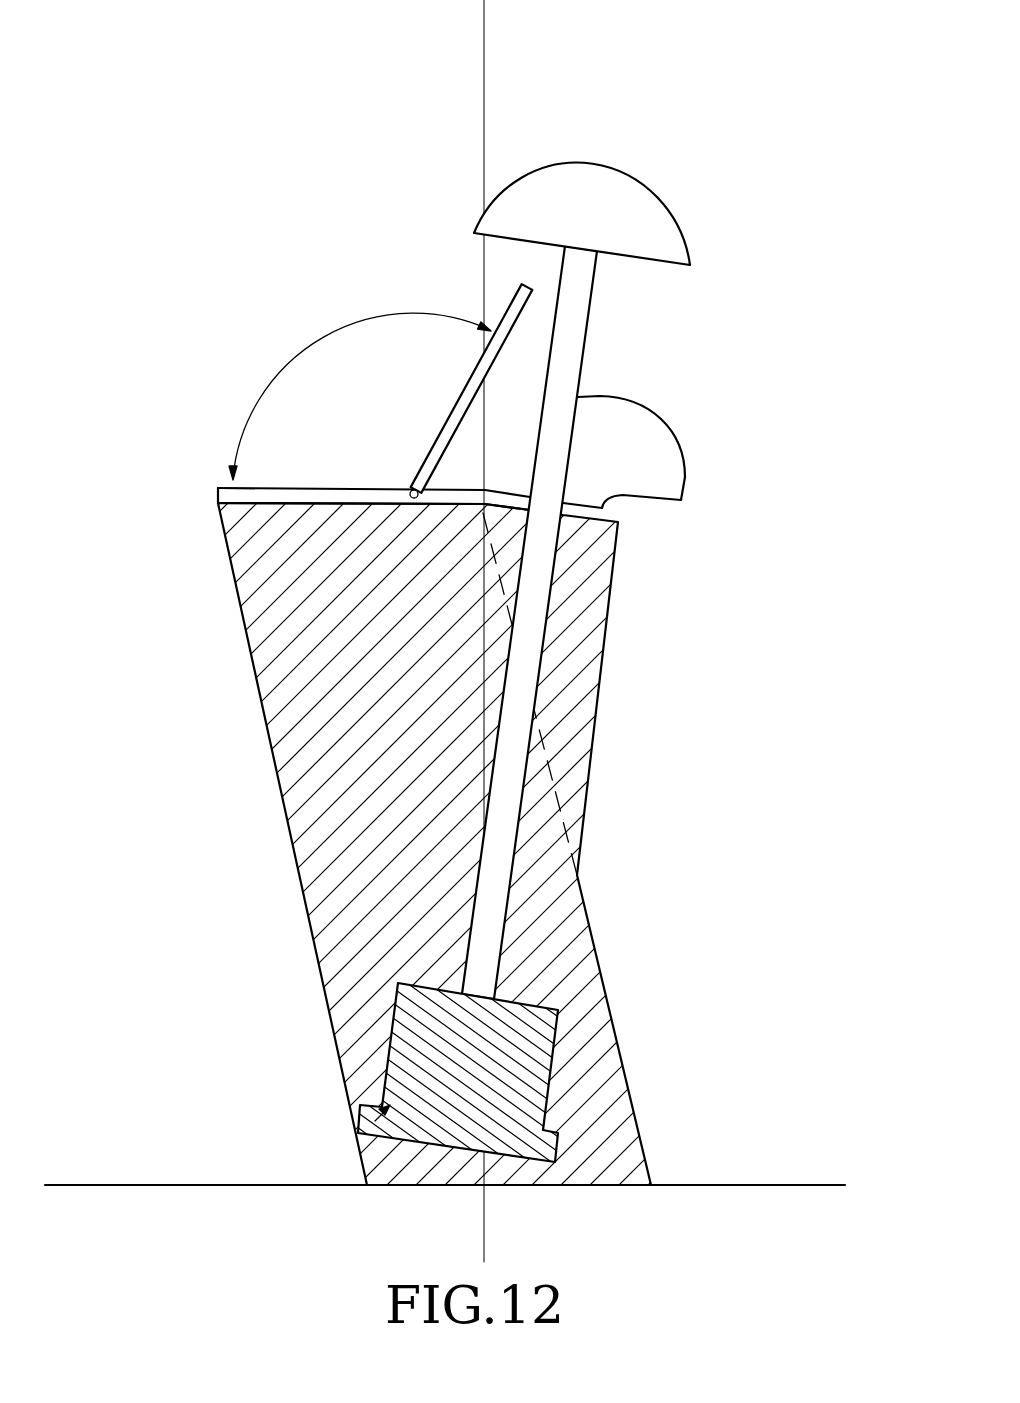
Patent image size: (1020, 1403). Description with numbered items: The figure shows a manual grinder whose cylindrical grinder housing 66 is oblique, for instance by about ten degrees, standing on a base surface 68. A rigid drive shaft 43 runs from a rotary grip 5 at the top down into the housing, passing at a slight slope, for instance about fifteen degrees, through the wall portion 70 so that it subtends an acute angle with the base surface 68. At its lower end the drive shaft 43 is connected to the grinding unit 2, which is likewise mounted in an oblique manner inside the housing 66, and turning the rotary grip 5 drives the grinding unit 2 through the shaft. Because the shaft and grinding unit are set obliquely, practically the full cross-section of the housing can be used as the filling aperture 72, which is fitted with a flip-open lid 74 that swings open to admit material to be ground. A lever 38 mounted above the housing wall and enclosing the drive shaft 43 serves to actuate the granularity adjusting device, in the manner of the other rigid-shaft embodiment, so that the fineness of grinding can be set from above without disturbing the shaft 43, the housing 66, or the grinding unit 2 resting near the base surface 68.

The rotary grip 5 is at (650, 200).
The flip-open lid 74 is at (510, 300).
The filling aperture 72 is at (317, 497).
The lever 38 is at (645, 462).
The rigid drive shaft 43 is at (530, 667).
The cylindrical grinder housing 66 is at (266, 718).
The wall portion 70 is at (558, 808).
The grinding unit 2 is at (358, 1135).
The base surface 68 is at (600, 1185).